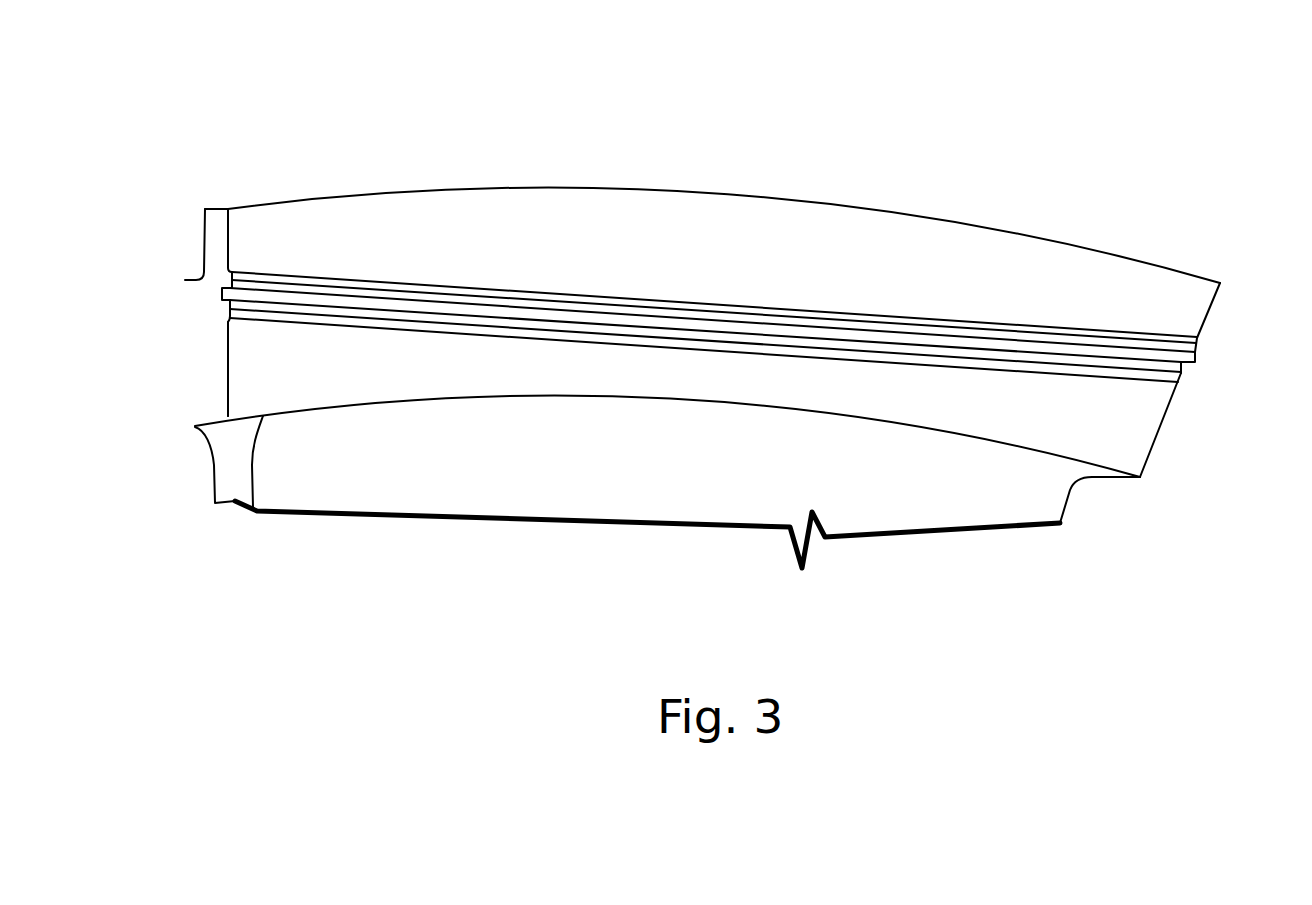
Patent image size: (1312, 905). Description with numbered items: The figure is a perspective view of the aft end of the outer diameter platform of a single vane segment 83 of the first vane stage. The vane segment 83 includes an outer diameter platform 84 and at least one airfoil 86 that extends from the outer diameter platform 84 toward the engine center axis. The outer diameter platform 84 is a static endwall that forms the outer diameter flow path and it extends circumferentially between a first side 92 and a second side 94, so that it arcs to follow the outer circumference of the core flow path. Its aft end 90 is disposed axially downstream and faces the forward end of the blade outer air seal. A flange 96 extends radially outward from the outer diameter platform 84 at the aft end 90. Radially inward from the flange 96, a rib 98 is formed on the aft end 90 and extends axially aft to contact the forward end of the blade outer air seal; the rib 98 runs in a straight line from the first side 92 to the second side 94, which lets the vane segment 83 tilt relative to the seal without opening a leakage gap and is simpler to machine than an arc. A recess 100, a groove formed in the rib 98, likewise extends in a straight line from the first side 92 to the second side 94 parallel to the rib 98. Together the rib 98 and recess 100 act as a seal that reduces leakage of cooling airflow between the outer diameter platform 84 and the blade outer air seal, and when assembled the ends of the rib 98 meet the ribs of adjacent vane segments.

The vane segment 83 is at (438, 106).
The outer diameter platform 84 is at (183, 281).
The airfoil 86 is at (467, 465).
The aft end 90 is at (1133, 457).
The first side 92 is at (226, 360).
The second side 94 is at (1158, 433).
The flange 96 is at (920, 238).
The rib 98 is at (1198, 347).
The recess 100 is at (1163, 363).